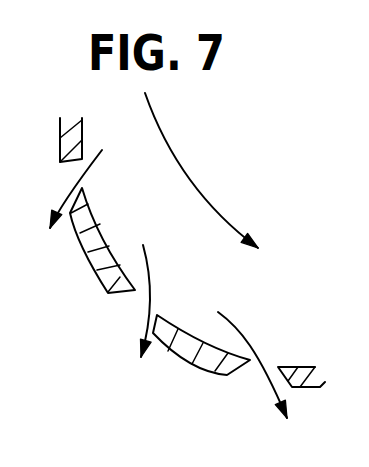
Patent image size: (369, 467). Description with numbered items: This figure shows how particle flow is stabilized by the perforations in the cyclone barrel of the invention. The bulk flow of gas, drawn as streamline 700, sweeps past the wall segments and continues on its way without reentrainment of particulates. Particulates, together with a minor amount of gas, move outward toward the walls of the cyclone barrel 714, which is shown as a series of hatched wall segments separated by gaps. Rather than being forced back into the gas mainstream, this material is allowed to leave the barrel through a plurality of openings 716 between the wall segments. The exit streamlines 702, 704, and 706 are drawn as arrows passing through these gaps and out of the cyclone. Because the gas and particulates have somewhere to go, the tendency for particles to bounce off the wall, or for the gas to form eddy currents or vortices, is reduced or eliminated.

The streamline 700 is at (218, 218).
The exit streamline 702 is at (95, 128).
The exit streamline 704 is at (148, 293).
The exit streamline 706 is at (258, 349).
The cyclone barrel 714 is at (85, 252).
The openings 716 is at (135, 300).